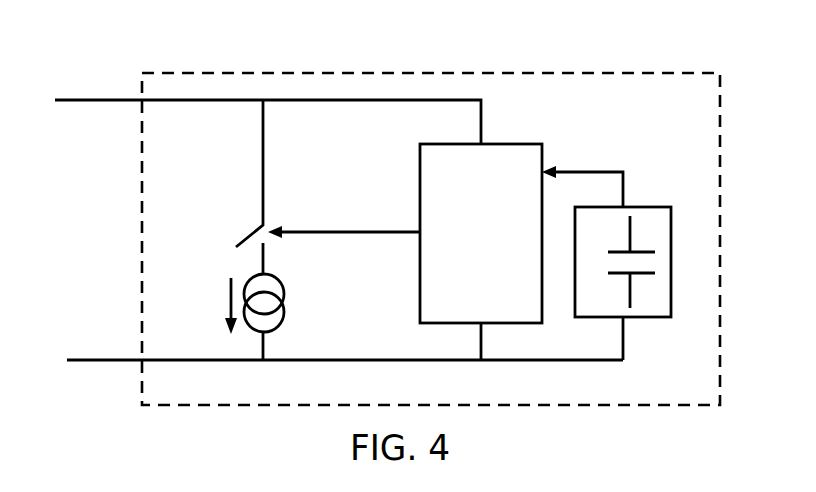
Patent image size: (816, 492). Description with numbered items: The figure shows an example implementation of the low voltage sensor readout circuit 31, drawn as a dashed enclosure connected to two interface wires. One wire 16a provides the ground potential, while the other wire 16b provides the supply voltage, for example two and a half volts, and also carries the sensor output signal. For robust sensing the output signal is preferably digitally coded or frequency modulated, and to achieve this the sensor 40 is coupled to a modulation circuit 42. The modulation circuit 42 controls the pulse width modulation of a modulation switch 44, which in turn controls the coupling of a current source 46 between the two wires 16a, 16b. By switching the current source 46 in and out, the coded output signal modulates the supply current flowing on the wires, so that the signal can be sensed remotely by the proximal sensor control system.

The low voltage sensor readout circuit 31 is at (598, 73).
The wire 16b is at (106, 100).
The wire 16a is at (106, 360).
The modulation switch 44 is at (243, 238).
The current source 46 is at (284, 312).
The modulation circuit 42 is at (420, 190).
The sensor 40 is at (653, 206).